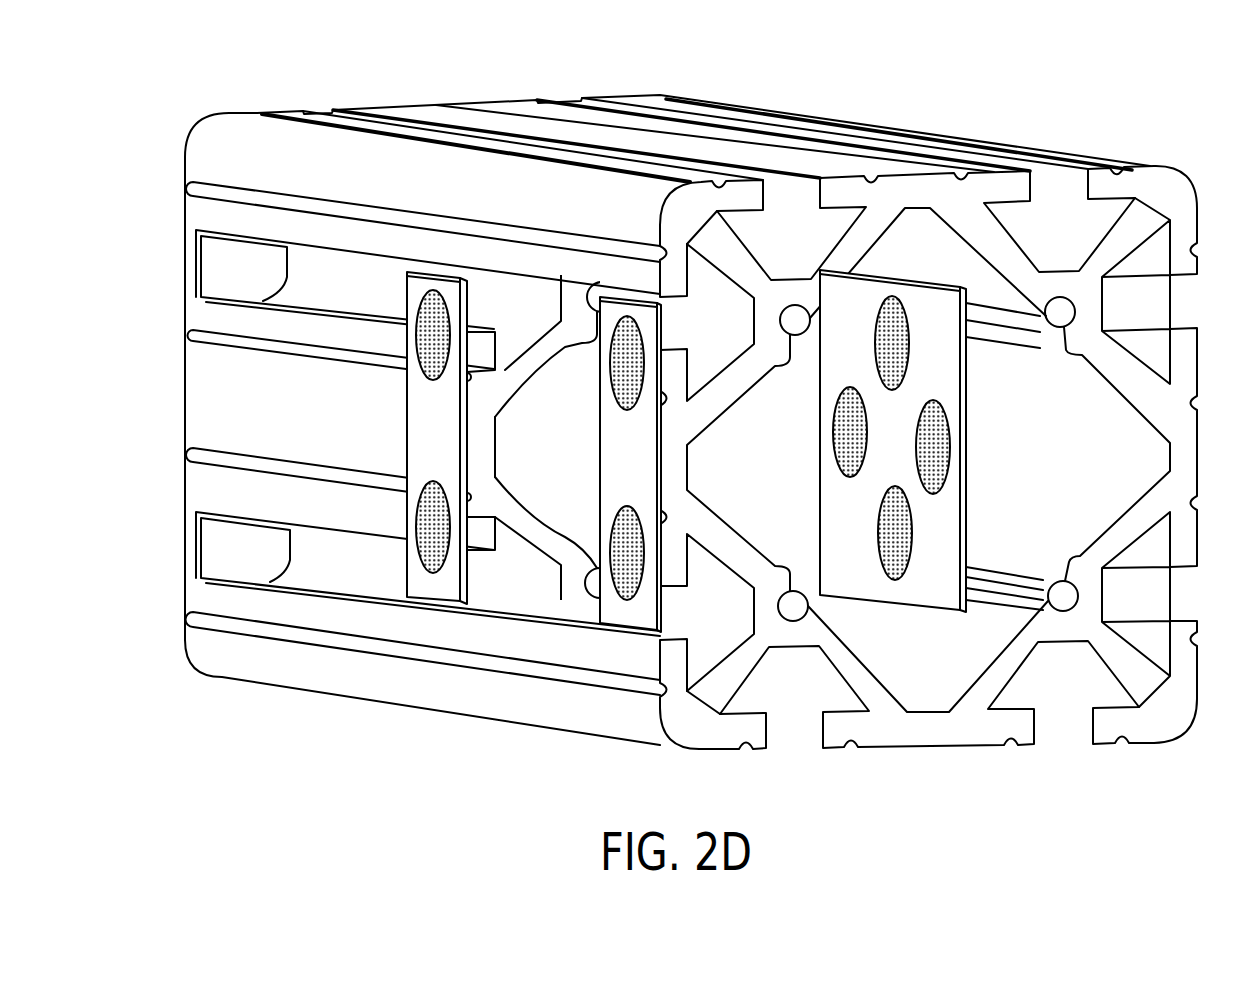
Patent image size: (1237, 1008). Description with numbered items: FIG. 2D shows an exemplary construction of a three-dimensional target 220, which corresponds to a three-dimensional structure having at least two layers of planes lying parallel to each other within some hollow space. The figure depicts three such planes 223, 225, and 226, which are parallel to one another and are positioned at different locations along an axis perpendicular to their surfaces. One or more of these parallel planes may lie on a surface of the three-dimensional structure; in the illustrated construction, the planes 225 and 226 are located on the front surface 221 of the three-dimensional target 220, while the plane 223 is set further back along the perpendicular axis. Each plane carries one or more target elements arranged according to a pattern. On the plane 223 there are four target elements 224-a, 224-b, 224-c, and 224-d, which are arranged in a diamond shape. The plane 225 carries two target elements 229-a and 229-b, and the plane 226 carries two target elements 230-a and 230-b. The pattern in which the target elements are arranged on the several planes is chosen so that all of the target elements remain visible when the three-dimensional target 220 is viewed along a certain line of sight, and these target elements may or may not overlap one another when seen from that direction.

The three-dimensional target 220 is at (691, 382).
The front surface 221 is at (227, 660).
The plane 223 is at (896, 441).
The target element 224-a is at (893, 307).
The target element 224-b is at (836, 430).
The target element 224-c is at (942, 450).
The target element 224-d is at (896, 572).
The plane 225 is at (398, 438).
The plane 226 is at (633, 464).
The target element 229-a is at (425, 310).
The target element 229-b is at (420, 550).
The target element 230-a is at (632, 346).
The target element 230-b is at (630, 588).